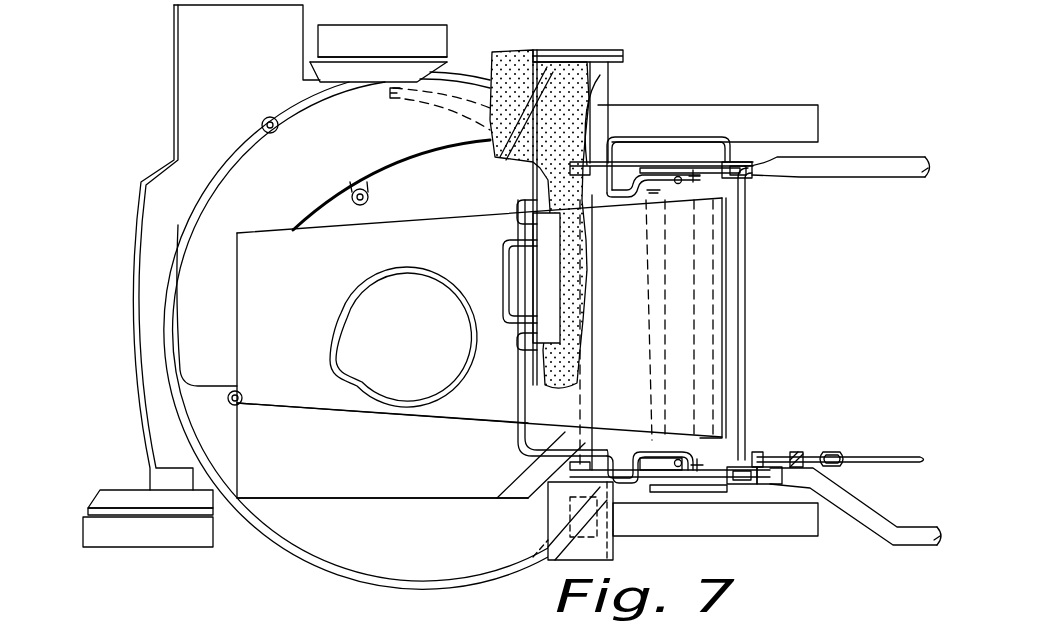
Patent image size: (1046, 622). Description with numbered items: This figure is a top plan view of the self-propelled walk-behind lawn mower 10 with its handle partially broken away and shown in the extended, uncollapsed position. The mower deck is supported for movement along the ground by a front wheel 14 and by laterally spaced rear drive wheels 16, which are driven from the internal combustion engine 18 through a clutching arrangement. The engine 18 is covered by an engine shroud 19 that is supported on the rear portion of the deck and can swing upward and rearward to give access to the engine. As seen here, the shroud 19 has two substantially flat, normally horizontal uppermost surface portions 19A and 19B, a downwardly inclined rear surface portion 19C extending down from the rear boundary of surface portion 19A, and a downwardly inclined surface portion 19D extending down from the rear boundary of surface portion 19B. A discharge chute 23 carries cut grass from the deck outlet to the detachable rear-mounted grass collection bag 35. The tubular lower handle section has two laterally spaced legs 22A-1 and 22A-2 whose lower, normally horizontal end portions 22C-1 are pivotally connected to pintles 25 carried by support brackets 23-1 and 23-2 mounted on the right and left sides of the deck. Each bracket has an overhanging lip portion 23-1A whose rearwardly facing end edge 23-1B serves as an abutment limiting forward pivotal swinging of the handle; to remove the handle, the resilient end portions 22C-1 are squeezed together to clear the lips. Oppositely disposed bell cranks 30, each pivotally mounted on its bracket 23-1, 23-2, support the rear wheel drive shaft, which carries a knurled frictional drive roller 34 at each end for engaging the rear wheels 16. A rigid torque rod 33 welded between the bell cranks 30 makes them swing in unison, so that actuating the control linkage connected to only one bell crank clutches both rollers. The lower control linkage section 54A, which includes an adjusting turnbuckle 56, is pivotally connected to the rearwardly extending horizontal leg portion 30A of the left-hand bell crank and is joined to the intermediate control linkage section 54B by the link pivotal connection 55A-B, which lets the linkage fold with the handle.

The lawn mower 10 is at (280, 556).
The front wheel 14 is at (447, 36).
The rear drive wheels 16 is at (733, 105).
The internal combustion engine 18 is at (367, 300).
The engine shroud 19 is at (236, 312).
The uppermost surface portion 19A is at (260, 233).
The uppermost surface portion 19B is at (330, 488).
The downwardly inclined rear surface portion 19C is at (687, 275).
The downwardly inclined surface portion 19D is at (520, 490).
The leg of lower handle section 22A-1 is at (810, 177).
The leg of lower handle section 22A-2 is at (845, 500).
The lower end portion of handle leg 22C-1 is at (768, 162).
The discharge chute 23 is at (433, 133).
The support bracket 23-1 is at (680, 207).
The overhanging lip portion 23-1A is at (733, 138).
The rearwardly facing end edge 23-1B is at (755, 170).
The support bracket 23-2 is at (700, 473).
The pintle 25 is at (752, 178).
The bell crank 30 is at (632, 192).
The horizontal leg portion of bell crank 30A is at (672, 197).
The torque rod 33 is at (657, 365).
The frictional drive roller 34 is at (597, 103).
The grass collection bag 35 is at (600, 82).
The lower control linkage section 54A is at (720, 462).
The intermediate control linkage section 54B is at (873, 463).
The pivotal connection 55A-B is at (863, 424).
The turnbuckle 56 is at (782, 484).